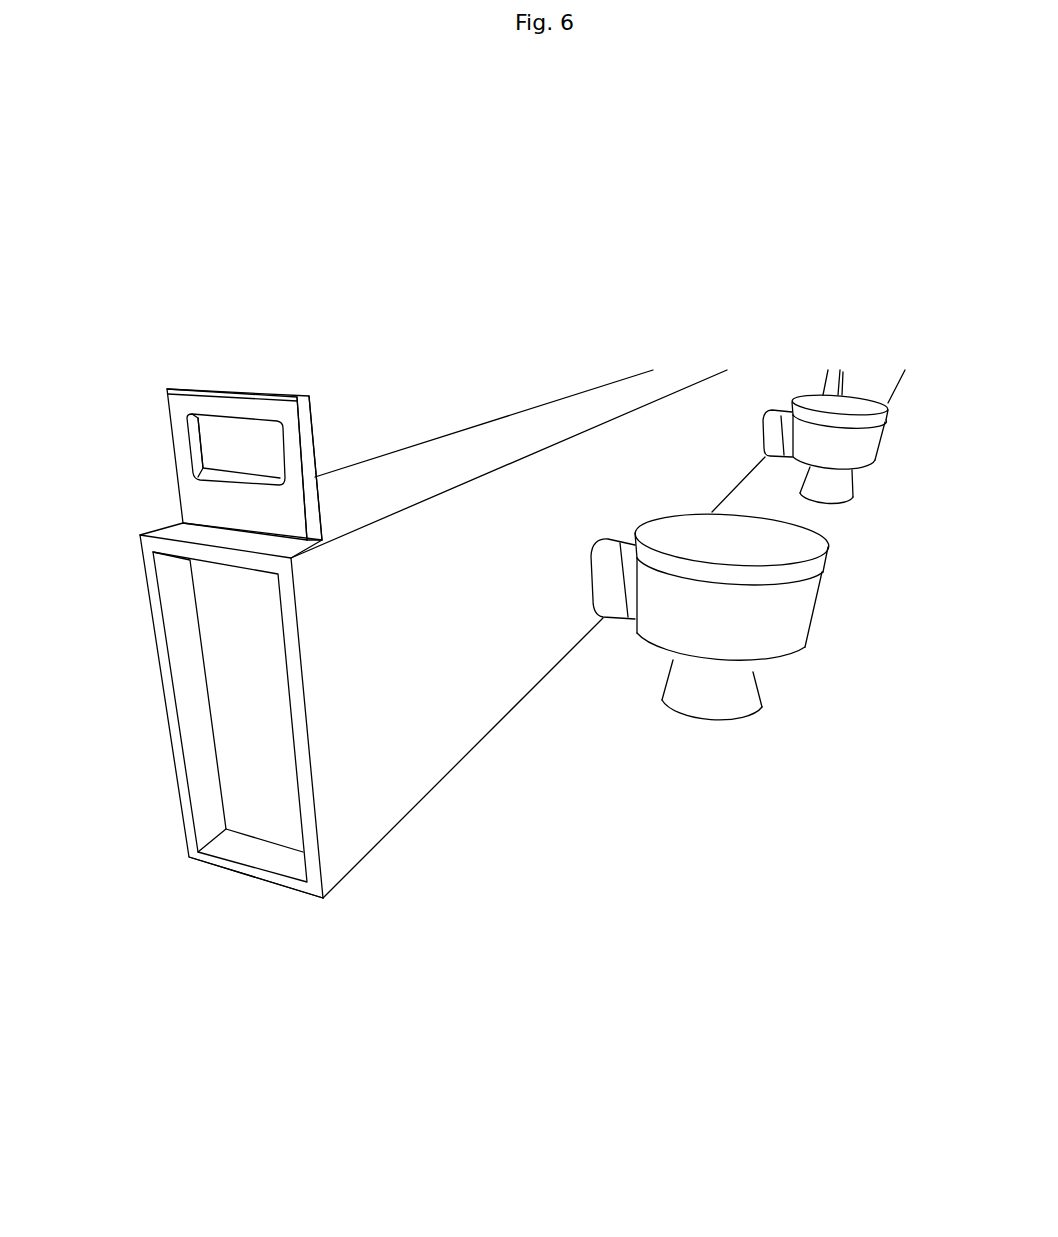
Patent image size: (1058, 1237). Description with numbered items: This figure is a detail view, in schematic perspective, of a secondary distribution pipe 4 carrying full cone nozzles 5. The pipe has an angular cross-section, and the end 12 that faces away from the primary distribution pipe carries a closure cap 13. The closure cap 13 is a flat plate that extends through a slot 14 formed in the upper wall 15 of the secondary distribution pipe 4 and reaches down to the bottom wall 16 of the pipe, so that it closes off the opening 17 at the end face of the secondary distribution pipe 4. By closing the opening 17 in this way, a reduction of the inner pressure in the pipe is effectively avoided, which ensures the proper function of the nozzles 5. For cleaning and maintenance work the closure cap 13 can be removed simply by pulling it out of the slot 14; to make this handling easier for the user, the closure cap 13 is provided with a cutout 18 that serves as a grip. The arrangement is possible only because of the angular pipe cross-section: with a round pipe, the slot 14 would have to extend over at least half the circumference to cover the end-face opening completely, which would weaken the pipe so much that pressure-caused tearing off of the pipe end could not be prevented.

The secondary distribution pipe 4 is at (458, 692).
The full cone nozzles 5 is at (742, 640).
The end 12 is at (270, 793).
The closure cap 13 is at (213, 421).
The slot 14 is at (298, 540).
The upper wall 15 is at (557, 422).
The bottom wall 16 is at (282, 862).
The opening 17 is at (252, 733).
The cutout 18 is at (250, 442).